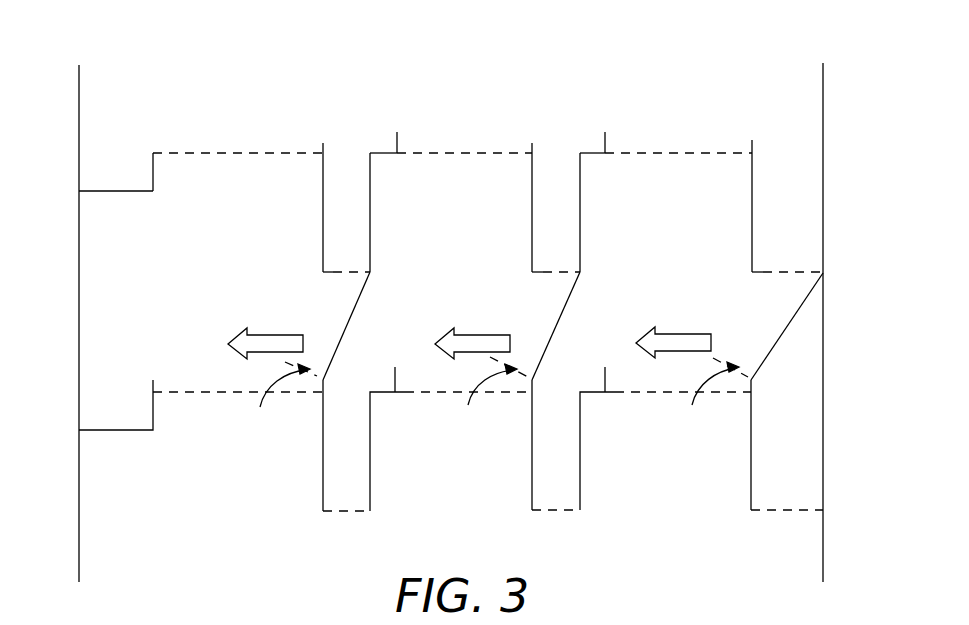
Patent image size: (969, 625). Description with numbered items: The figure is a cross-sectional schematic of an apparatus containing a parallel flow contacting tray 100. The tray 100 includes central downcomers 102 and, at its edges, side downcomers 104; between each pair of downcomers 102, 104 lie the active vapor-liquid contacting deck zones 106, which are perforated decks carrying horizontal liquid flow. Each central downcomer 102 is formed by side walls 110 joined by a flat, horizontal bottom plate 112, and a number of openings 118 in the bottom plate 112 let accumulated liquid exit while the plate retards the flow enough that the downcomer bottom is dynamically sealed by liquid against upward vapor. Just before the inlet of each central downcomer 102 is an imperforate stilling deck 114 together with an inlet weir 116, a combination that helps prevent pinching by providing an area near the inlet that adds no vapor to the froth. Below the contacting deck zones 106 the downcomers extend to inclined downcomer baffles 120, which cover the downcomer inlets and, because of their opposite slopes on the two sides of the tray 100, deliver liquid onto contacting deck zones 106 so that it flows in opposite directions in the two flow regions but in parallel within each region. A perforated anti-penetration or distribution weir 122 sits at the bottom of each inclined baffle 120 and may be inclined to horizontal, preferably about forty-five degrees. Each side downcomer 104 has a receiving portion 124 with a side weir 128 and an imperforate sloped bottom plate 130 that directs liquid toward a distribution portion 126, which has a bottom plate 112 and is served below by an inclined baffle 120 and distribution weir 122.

The contacting tray 100 is at (183, 33).
The central downcomer 102 is at (348, 148).
The side downcomer 104 is at (118, 127).
The vapor-liquid contacting deck zone 106 is at (270, 152).
The side wall 110 is at (323, 183).
The bottom plate 112 is at (335, 273).
The stilling deck 114 is at (382, 156).
The inlet weir 116 is at (397, 132).
The opening 118 is at (347, 270).
The inclined downcomer baffle 120 is at (347, 325).
The distribution weir 122 is at (493, 395).
The receiving portion 124 is at (87, 173).
The distribution portion 126 is at (808, 175).
The side weir 128 is at (153, 152).
The sloped bottom plate 130 is at (114, 192).